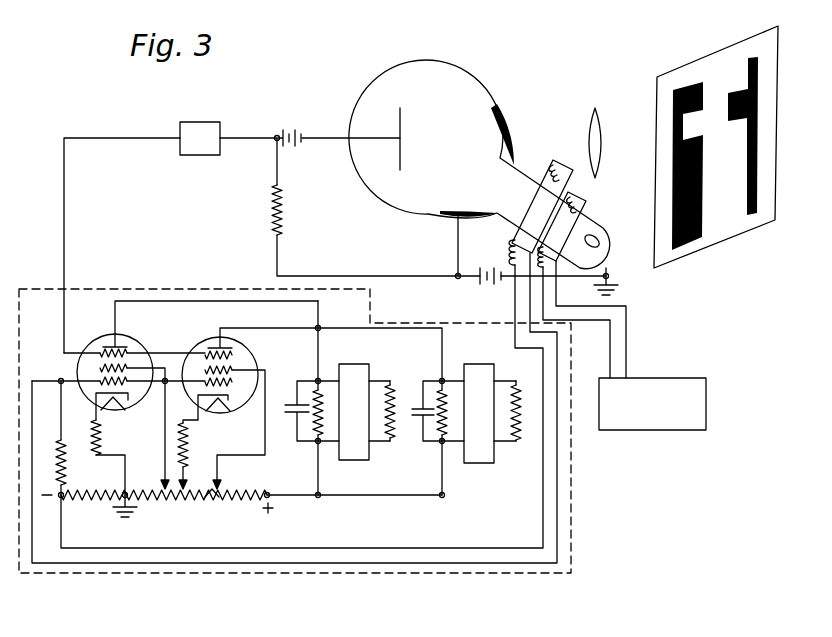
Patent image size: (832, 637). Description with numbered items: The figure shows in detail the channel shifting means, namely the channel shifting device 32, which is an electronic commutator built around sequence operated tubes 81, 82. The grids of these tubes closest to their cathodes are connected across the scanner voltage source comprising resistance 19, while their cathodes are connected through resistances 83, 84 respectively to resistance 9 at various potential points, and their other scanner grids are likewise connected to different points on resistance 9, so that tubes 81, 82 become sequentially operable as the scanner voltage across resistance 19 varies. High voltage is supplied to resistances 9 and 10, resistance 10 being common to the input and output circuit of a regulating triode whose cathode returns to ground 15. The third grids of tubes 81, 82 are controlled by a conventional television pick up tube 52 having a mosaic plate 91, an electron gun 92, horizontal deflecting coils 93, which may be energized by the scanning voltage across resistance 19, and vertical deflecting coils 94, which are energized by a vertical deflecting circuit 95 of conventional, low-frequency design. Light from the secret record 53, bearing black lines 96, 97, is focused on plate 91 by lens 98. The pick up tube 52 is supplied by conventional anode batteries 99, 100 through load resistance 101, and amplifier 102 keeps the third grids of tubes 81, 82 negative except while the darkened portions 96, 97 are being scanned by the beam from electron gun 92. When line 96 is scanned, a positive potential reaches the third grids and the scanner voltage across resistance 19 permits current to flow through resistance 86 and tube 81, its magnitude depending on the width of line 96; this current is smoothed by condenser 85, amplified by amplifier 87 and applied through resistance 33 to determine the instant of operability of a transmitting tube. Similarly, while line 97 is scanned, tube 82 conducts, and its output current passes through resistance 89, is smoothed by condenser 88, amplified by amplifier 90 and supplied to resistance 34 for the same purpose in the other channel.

The amplifier 102 is at (202, 122).
The anode battery 99 is at (314, 108).
The load resistance 101 is at (268, 203).
The anode battery 100 is at (478, 272).
The television pick up tube 52 is at (415, 60).
The mosaic plate 91 is at (402, 136).
The electron gun 92 is at (600, 230).
The horizontal deflecting coils 93 is at (553, 165).
The vertical deflecting coils 94 is at (584, 200).
The lens 98 is at (594, 112).
The secret record 53 is at (710, 55).
The black line 96 is at (703, 190).
The black line 97 is at (750, 155).
The vertical deflecting circuit 95 is at (668, 430).
The sequence operated tube 81 is at (100, 338).
The sequence operated tube 82 is at (213, 340).
The resistance 83 is at (101, 450).
The resistance 84 is at (188, 452).
The resistance 19 is at (63, 453).
The resistance 10 is at (93, 496).
The ground 15 is at (135, 509).
The resistance 9 is at (212, 497).
The condenser 85 is at (297, 405).
The resistance 86 is at (322, 392).
The amplifier 87 is at (350, 452).
The resistance 33 is at (403, 372).
The condenser 88 is at (418, 418).
The resistance 89 is at (446, 392).
The amplifier 90 is at (476, 455).
The resistance 34 is at (530, 374).
The channel shifting device 32 is at (576, 496).